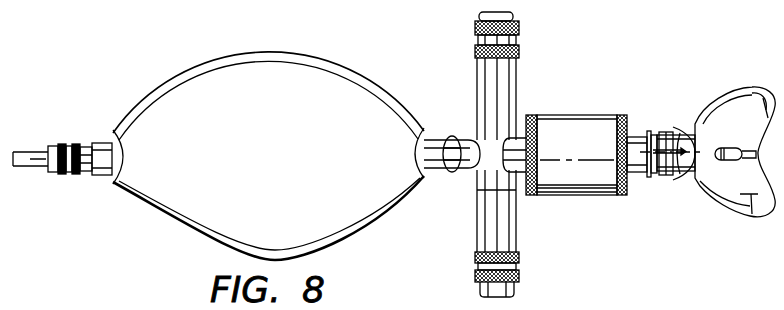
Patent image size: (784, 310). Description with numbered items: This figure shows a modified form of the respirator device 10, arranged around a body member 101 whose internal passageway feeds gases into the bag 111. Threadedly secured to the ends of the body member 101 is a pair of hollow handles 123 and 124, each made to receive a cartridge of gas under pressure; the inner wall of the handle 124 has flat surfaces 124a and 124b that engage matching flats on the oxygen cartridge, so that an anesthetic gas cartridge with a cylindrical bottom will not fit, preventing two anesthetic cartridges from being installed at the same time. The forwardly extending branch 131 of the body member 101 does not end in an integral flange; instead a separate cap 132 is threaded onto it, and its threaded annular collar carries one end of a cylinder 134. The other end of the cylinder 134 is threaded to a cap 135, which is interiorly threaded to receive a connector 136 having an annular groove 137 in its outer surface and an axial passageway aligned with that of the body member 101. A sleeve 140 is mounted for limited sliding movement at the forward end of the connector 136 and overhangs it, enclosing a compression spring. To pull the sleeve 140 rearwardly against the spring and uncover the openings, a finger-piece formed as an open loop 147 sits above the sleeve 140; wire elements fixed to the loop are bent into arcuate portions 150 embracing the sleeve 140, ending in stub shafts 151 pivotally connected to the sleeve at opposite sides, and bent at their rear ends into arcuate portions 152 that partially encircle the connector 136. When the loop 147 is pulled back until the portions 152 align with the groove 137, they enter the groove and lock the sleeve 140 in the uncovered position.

The resuscitator apparatus 10 is at (441, 128).
The body member 101 is at (470, 183).
The bag 111 is at (216, 226).
The handle 123 is at (477, 86).
The handle 124 is at (515, 216).
The flat surface 124a is at (480, 283).
The flat surface 124b is at (518, 280).
The forwardly extending branch 131 is at (517, 134).
The cap 132 is at (528, 117).
The cylinder 134 is at (566, 194).
The cap 135 is at (622, 115).
The connector 136 is at (629, 176).
The annular groove 137 is at (649, 131).
The sleeve 140 is at (733, 212).
The open loop 147 is at (676, 135).
The arcuate portions 150 is at (686, 132).
The stub shafts 151 is at (699, 120).
The arcuate portions 152 is at (656, 135).